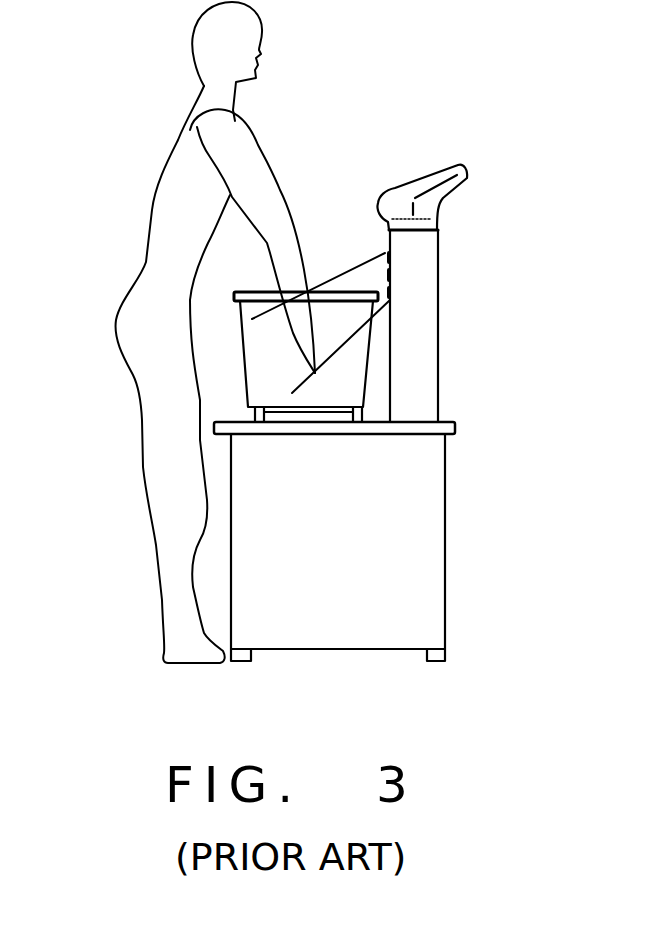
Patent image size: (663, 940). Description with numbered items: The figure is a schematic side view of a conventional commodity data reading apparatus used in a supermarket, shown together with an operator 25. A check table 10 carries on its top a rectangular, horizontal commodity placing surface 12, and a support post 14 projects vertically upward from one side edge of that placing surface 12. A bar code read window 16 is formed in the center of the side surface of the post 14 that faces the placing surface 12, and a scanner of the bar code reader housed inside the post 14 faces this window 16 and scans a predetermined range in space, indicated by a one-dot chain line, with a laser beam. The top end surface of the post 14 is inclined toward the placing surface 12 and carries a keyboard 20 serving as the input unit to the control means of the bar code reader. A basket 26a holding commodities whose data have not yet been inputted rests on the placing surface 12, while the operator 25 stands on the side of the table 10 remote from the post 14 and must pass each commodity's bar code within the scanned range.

The check table 10 is at (447, 492).
The commodity placing surface 12 is at (228, 421).
The support post 14 is at (441, 332).
The bar code read window 16 is at (390, 270).
The keyboard 20 is at (412, 188).
The operator 25 is at (163, 157).
The basket 26a is at (240, 313).